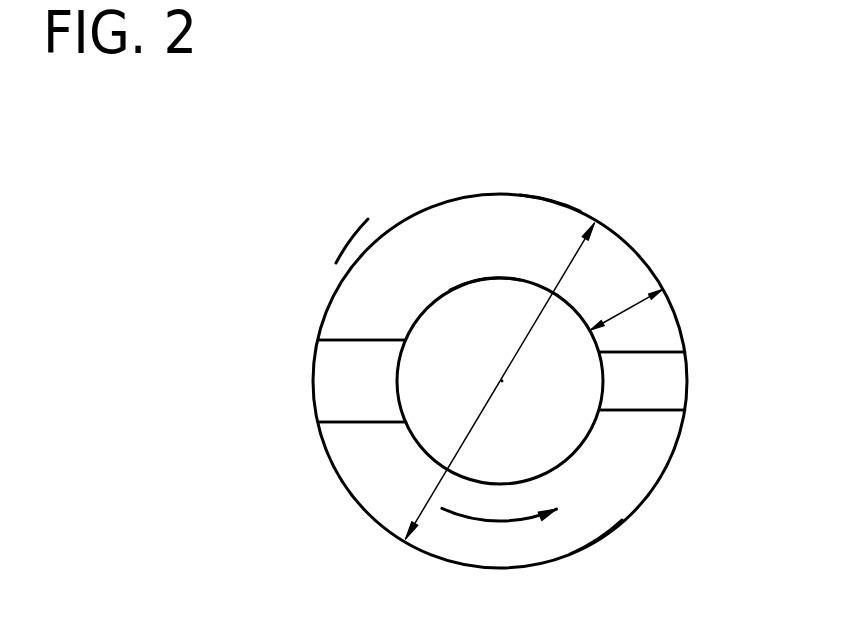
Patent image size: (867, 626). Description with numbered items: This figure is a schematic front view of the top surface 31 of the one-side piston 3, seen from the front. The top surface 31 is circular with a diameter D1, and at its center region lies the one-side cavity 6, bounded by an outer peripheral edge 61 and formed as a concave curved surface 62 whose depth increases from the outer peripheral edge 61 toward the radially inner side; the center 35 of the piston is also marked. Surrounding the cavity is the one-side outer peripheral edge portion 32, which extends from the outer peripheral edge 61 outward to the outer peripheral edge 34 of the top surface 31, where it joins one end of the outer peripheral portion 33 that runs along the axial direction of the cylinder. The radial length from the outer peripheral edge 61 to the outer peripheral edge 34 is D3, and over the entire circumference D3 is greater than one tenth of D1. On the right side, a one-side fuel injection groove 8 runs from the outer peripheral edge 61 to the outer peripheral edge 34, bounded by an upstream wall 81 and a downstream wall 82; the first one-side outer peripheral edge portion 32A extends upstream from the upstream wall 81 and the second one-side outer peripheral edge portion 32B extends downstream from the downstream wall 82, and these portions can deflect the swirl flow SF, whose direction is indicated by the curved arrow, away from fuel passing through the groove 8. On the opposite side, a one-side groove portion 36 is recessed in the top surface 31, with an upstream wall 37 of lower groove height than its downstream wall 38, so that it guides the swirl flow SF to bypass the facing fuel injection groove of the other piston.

The one-side piston 3 is at (268, 114).
The top surface 31 is at (362, 278).
The one-side outer peripheral edge portion 32 is at (387, 277).
The first one-side outer peripheral edge portion 32A is at (624, 499).
The second one-side outer peripheral edge portion 32B is at (554, 259).
The outer peripheral portion 33 is at (595, 543).
The outer peripheral edge 34 is at (543, 195).
The one-side cavity 6 is at (443, 313).
The outer peripheral edge 61 is at (482, 271).
The concave curved surface 62 is at (481, 373).
The center 35 is at (503, 382).
The one-side groove portion 36 is at (330, 385).
The upstream wall 37 is at (343, 340).
The downstream wall 38 is at (343, 423).
The one-side fuel injection groove 8 is at (672, 385).
The upstream wall 81 is at (660, 410).
The downstream wall 82 is at (660, 352).
The diameter of the top surface D1 is at (500, 381).
The radial length D3 is at (627, 306).
The swirl flow SF is at (495, 522).